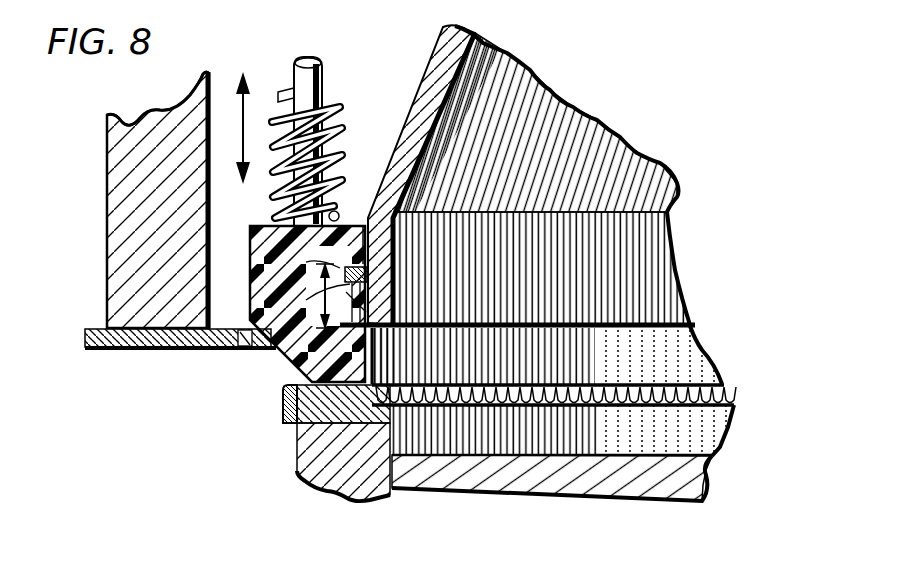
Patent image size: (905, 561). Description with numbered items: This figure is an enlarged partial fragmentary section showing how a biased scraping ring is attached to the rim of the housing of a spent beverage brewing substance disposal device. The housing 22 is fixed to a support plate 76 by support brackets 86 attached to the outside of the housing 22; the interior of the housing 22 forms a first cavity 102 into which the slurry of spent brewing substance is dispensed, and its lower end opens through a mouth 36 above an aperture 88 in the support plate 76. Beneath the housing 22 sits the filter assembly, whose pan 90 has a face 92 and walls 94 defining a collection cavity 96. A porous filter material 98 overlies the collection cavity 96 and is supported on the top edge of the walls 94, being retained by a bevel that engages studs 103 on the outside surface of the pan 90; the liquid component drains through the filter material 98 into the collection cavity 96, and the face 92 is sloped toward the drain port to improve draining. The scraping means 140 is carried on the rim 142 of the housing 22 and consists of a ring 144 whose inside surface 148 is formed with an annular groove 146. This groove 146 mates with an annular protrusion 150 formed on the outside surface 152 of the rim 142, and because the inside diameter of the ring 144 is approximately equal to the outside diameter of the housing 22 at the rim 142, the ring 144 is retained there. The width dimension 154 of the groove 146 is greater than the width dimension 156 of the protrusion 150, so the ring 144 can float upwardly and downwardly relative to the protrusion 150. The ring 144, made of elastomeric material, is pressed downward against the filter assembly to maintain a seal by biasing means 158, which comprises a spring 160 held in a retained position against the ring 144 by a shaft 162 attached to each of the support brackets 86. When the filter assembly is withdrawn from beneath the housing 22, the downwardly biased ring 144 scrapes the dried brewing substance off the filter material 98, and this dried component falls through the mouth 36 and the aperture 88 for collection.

The housing 22 is at (447, 48).
The mouth 36 is at (398, 340).
The support plate 76 is at (92, 338).
The support brackets 86 is at (107, 192).
The aperture 88 is at (244, 346).
The pan 90 is at (280, 458).
The face 92 is at (724, 447).
The walls 94 is at (720, 416).
The collection cavity 96 is at (686, 448).
The porous filter material 98 is at (695, 394).
The first cavity 102 is at (650, 200).
The studs 103 is at (283, 432).
The scraping means 140 is at (98, 118).
The rim 142 is at (400, 298).
The ring 144 is at (292, 352).
The annular groove 146 is at (276, 224).
The inside surface 148 is at (402, 243).
The annular protrusion 150 is at (285, 420).
The outside surface 152 is at (364, 226).
The width dimension 154 is at (250, 298).
The width dimension 156 is at (386, 344).
The biasing means 158 is at (266, 78).
The spring 160 is at (340, 103).
The shaft 162 is at (318, 58).